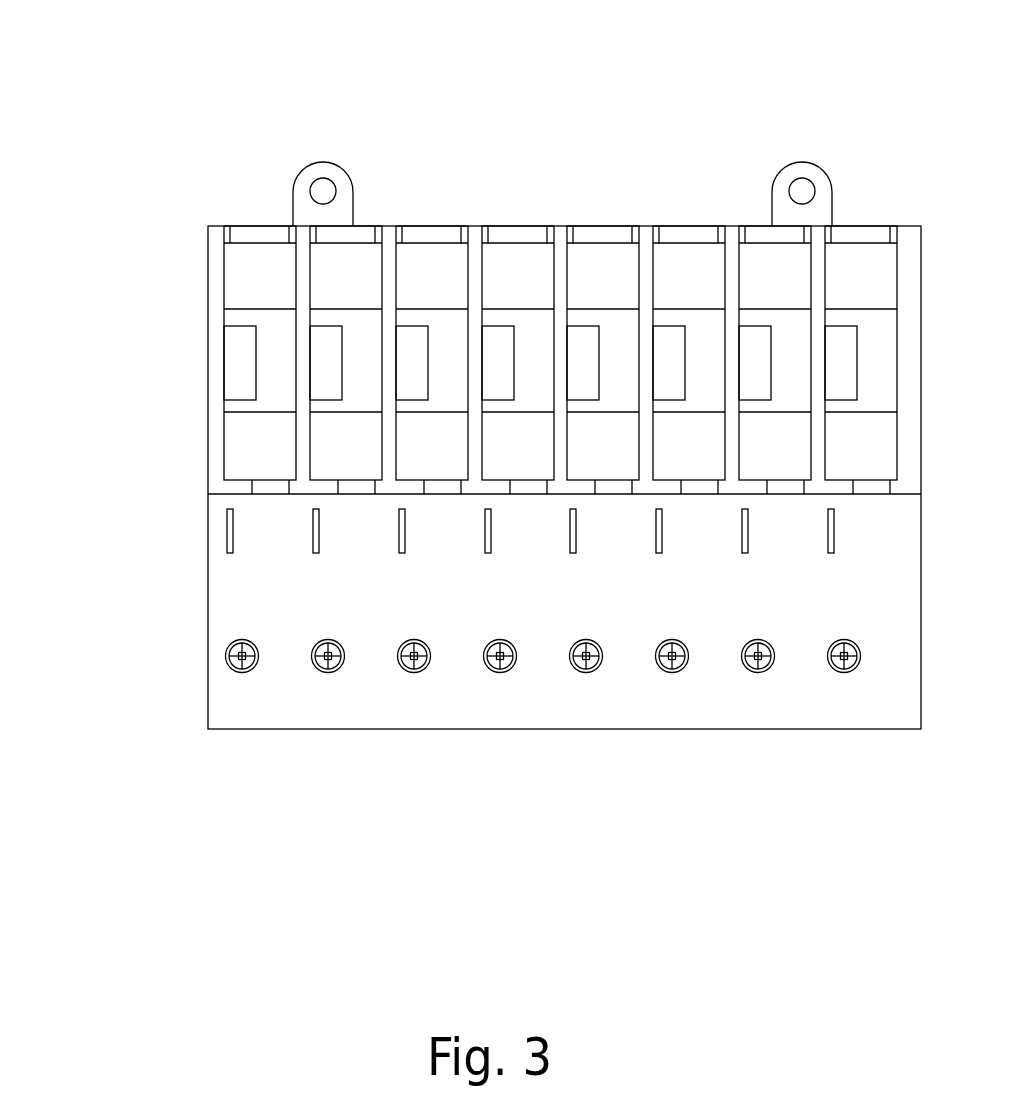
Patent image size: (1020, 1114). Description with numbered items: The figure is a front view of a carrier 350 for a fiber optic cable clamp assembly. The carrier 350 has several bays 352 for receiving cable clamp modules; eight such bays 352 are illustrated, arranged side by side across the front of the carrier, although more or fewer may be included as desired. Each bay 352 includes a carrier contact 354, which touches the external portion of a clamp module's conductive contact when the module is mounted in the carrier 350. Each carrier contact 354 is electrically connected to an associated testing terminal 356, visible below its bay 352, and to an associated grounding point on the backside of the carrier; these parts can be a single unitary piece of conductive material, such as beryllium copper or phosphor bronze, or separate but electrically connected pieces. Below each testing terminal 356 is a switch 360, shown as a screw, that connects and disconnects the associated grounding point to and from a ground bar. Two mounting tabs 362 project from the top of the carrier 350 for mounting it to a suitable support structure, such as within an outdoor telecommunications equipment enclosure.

The carrier 350 is at (486, 368).
The bay 352 is at (267, 258).
The carrier contact 354 is at (240, 371).
The testing terminal 356 is at (225, 534).
The switch 360 is at (226, 657).
The mounting tab 362 is at (330, 163).